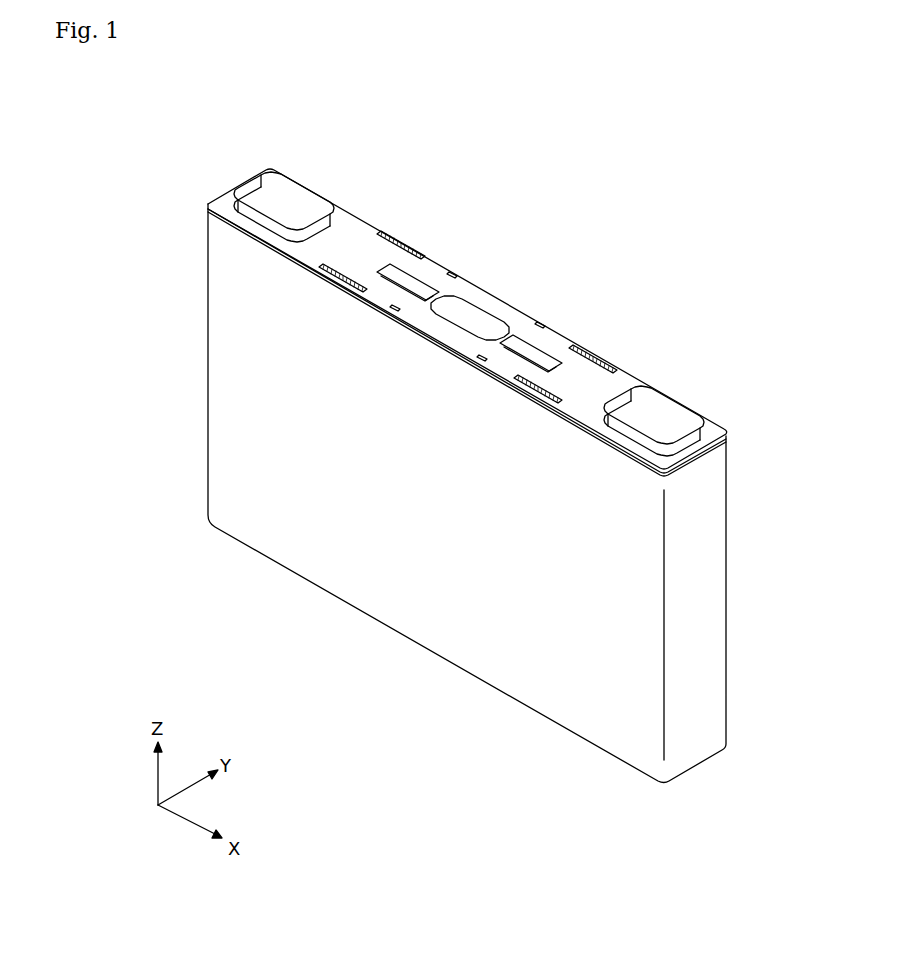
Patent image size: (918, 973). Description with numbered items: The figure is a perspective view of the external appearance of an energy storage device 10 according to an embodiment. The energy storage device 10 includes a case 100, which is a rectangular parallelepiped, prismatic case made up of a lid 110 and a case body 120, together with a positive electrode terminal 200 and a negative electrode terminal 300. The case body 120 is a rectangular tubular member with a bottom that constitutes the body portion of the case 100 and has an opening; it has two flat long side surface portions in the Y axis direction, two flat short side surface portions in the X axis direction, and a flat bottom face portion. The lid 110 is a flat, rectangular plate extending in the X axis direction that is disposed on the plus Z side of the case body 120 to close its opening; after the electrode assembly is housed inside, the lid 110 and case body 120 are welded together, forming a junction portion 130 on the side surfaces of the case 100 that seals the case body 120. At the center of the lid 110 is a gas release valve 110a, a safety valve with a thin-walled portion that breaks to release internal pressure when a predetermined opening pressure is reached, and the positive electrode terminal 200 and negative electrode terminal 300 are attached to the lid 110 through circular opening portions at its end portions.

The energy storage device 10 is at (695, 162).
The case 100 is at (138, 295).
The lid 110 is at (318, 255).
The gas release valve 110a is at (478, 299).
The case body 120 is at (243, 360).
The junction portion 130 is at (438, 345).
The positive electrode terminal 200 is at (666, 408).
The negative electrode terminal 300 is at (296, 196).